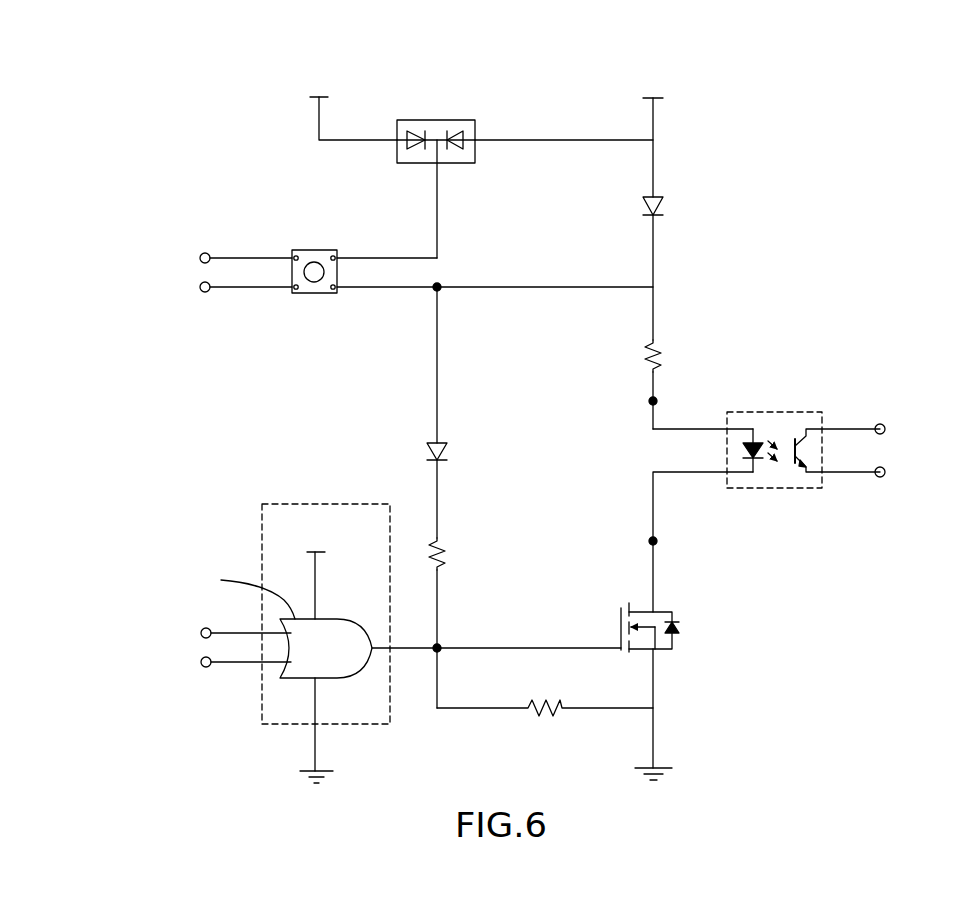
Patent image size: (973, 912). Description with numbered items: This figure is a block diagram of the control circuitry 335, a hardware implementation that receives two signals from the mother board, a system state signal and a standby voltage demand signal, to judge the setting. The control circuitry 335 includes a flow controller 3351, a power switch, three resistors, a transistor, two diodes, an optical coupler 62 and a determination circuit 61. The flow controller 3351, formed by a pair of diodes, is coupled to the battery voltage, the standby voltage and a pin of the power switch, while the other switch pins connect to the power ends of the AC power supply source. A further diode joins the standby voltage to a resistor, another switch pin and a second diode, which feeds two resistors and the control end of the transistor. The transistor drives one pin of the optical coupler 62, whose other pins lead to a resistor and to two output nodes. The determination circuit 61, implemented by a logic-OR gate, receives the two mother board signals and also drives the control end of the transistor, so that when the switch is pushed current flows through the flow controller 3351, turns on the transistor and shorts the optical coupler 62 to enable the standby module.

The control circuitry 335 is at (878, 32).
The flow controller 3351 is at (451, 120).
The determination circuit 61 is at (316, 503).
The optical coupler 62 is at (780, 412).